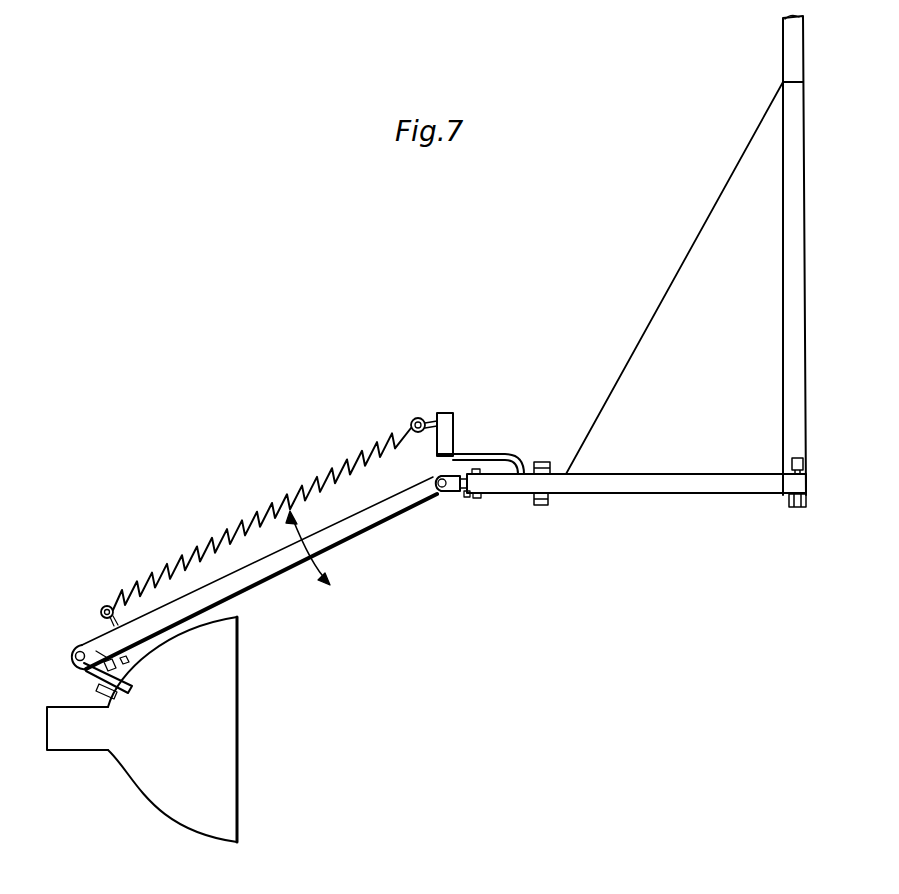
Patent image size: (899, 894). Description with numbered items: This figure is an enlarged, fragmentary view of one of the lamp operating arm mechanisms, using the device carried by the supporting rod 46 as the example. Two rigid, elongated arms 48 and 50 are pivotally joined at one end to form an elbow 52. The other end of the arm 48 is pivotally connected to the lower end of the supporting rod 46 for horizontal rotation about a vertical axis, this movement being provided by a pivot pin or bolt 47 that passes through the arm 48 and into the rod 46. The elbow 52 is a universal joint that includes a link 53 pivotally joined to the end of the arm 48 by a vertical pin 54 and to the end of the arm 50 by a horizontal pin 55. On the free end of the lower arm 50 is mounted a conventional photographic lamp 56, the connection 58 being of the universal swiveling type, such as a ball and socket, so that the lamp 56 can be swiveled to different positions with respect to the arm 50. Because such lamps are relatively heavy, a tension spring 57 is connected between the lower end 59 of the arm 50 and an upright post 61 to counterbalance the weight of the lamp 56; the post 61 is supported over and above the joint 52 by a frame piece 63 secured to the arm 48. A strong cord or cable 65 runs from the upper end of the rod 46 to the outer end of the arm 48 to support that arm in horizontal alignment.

The supporting rod 46 is at (807, 290).
The pivot pin or bolt 47 is at (796, 510).
The arm 48 is at (670, 474).
The arm 50 is at (363, 534).
The elbow 52 is at (466, 496).
The link 53 is at (456, 494).
The vertical pin 54 is at (476, 496).
The horizontal pin 55 is at (432, 478).
The photographic lamp 56 is at (158, 803).
The tension spring 57 is at (233, 532).
The universal swiveling connection 58 is at (89, 676).
The lower end of arm 59 is at (83, 641).
The upright post 61 is at (453, 423).
The frame piece 63 is at (496, 456).
The cord or cable 65 is at (668, 292).